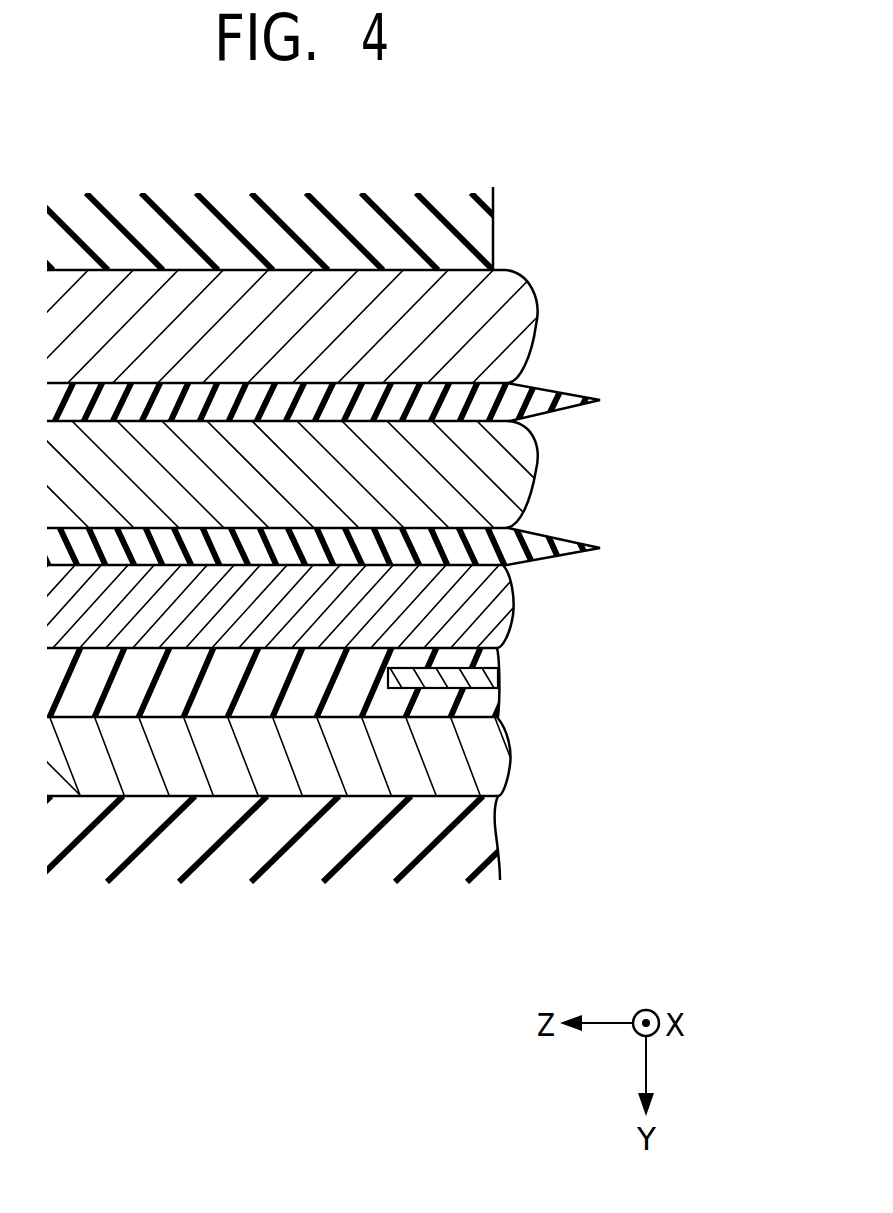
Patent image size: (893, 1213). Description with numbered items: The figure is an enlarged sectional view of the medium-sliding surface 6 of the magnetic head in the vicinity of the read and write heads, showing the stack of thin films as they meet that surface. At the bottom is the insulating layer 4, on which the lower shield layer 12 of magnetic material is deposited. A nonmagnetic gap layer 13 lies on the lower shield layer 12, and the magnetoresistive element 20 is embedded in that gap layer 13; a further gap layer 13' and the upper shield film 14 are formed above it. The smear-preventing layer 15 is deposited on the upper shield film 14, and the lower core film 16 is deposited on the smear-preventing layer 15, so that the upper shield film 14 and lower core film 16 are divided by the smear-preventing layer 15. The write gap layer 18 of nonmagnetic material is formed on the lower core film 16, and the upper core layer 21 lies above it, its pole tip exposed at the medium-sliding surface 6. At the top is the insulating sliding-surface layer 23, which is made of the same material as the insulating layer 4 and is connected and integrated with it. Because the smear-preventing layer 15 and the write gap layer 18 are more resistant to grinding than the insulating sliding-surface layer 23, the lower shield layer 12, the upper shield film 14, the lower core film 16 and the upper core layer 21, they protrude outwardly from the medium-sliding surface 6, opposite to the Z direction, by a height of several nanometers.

The insulating sliding-surface layer 23 is at (472, 218).
The upper core layer 21 is at (497, 332).
The write gap layer 18 is at (602, 400).
The lower core film 16 is at (508, 470).
The smear-preventing layer 15 is at (600, 548).
The upper shield film 14 is at (497, 602).
The gap layer 13' is at (322, 677).
The magnetoresistive element 20 is at (475, 680).
The gap layer 13 is at (340, 697).
The lower shield layer 12 is at (483, 763).
The insulating layer 4 is at (477, 843).
The medium-sliding surface 6 is at (516, 865).